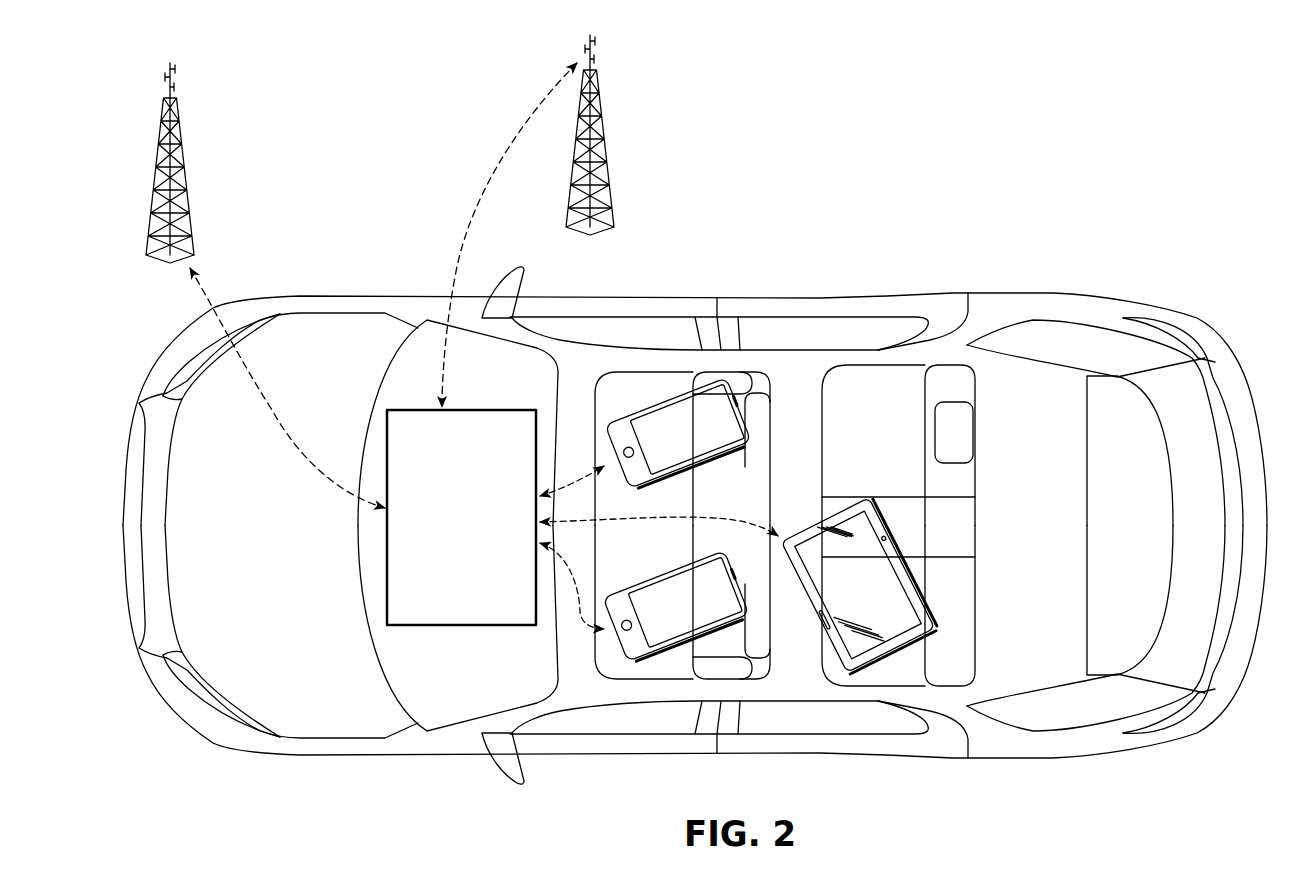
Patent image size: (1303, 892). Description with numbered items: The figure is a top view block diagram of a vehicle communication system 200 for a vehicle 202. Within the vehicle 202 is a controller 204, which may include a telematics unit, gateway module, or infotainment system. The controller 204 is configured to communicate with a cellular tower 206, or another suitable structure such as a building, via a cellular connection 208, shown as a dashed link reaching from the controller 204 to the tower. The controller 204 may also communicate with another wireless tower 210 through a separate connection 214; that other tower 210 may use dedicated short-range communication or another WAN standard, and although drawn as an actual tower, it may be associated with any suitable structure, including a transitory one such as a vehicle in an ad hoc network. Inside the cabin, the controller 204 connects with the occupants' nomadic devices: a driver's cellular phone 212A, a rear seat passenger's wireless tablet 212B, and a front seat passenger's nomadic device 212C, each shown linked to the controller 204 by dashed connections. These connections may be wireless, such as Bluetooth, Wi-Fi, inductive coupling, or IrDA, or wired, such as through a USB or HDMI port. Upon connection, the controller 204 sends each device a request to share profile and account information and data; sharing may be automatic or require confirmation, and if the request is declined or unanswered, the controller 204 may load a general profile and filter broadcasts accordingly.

The vehicle communication system 200 is at (1010, 242).
The vehicle 202 is at (778, 297).
The controller 204 is at (387, 575).
The cellular tower 206 is at (604, 137).
The cellular connection 208 is at (460, 230).
The wireless tower 210 is at (186, 170).
The driver's cellular phone 212A is at (676, 607).
The rear seat passenger's wireless tablet 212B is at (859, 585).
The front seat passenger's nomadic device 212C is at (678, 434).
The separate connection 214 is at (272, 412).